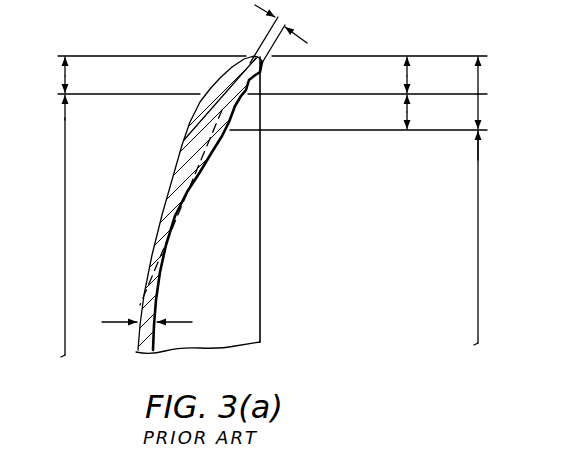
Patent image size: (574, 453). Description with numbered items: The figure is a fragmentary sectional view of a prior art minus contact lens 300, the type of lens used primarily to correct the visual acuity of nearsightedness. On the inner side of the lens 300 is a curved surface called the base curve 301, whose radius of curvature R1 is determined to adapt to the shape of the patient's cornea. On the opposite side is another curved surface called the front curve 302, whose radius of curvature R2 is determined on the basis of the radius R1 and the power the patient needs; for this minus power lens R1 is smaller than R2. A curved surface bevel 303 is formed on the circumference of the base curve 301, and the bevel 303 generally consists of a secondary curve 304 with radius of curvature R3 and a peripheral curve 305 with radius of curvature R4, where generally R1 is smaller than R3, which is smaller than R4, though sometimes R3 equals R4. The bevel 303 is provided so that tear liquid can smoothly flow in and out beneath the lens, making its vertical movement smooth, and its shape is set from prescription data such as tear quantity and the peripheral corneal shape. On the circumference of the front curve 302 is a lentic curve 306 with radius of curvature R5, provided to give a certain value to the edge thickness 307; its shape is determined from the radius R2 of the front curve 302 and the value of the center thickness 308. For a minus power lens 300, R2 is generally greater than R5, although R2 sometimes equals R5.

The lens 300 is at (134, 170).
The base curve 301 is at (478, 250).
The front curve 302 is at (65, 220).
The bevel 303 is at (478, 90).
The secondary curve 304 is at (407, 112).
The peripheral curve 305 is at (407, 72).
The lentic curve 306 is at (65, 75).
The edge thickness 307 is at (285, 24).
The center thickness 308 is at (168, 326).
The radius of curvature of base curve R1 is at (163, 262).
The radius of curvature of front curve R2 is at (157, 220).
The radius of curvature of secondary curve R3 is at (216, 82).
The radius of curvature of peripheral curve R4 is at (260, 84).
The radius of curvature of lentic curve R5 is at (236, 111).